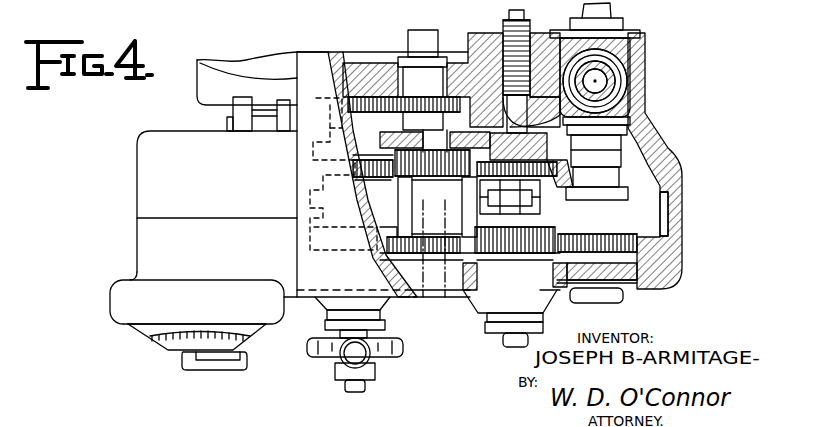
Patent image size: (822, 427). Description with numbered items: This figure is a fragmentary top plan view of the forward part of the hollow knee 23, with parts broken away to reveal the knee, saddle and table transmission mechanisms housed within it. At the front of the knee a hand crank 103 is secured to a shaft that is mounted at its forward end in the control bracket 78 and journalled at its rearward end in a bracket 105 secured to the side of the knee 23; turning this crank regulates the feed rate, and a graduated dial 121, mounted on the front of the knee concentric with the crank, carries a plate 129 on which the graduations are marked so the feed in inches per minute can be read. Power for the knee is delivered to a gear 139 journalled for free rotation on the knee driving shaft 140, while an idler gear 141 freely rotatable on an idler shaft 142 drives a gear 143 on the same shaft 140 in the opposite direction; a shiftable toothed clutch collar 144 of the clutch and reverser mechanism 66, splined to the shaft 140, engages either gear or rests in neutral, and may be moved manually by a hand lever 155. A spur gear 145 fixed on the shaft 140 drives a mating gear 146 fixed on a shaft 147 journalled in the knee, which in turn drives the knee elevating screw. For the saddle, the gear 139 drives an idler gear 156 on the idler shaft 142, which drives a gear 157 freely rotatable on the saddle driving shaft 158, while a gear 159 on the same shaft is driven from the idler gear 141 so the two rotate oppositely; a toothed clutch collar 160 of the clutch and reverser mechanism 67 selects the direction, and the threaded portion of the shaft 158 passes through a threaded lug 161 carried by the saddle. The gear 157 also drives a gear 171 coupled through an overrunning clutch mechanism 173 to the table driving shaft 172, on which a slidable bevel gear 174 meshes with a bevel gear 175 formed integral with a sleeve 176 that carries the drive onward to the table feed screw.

The knee 23 is at (208, 68).
The clutch and reverser mechanism 66 is at (400, 196).
The clutch and reverser mechanism 67 is at (475, 209).
The control bracket 78 is at (146, 250).
The hand crank 103 is at (233, 368).
The bracket 105 is at (148, 152).
The graduated dial 121 is at (126, 330).
The plate 129 is at (173, 348).
The gear 139 is at (310, 240).
The knee driving shaft 140 is at (364, 388).
The idler gear 141 is at (421, 178).
The idler shaft 142 is at (428, 297).
The gear 143 is at (362, 165).
The clutch collar 144 is at (312, 218).
The spur gear 145 is at (303, 78).
The gear 146 is at (398, 100).
The shaft 147 is at (420, 35).
The hand lever 155 is at (348, 358).
The idler gear 156 is at (443, 298).
The gear 157 is at (562, 232).
The saddle driving shaft 158 is at (509, 22).
The gear 159 is at (572, 172).
The clutch collar 160 is at (553, 206).
The lug 161 is at (500, 33).
The gear 171 is at (664, 244).
The table driving shaft 172 is at (618, 6).
The overrunning clutch mechanism 173 is at (616, 207).
The bevel gear 174 is at (628, 58).
The bevel gear 175 is at (640, 100).
The sleeve 176 is at (604, 84).